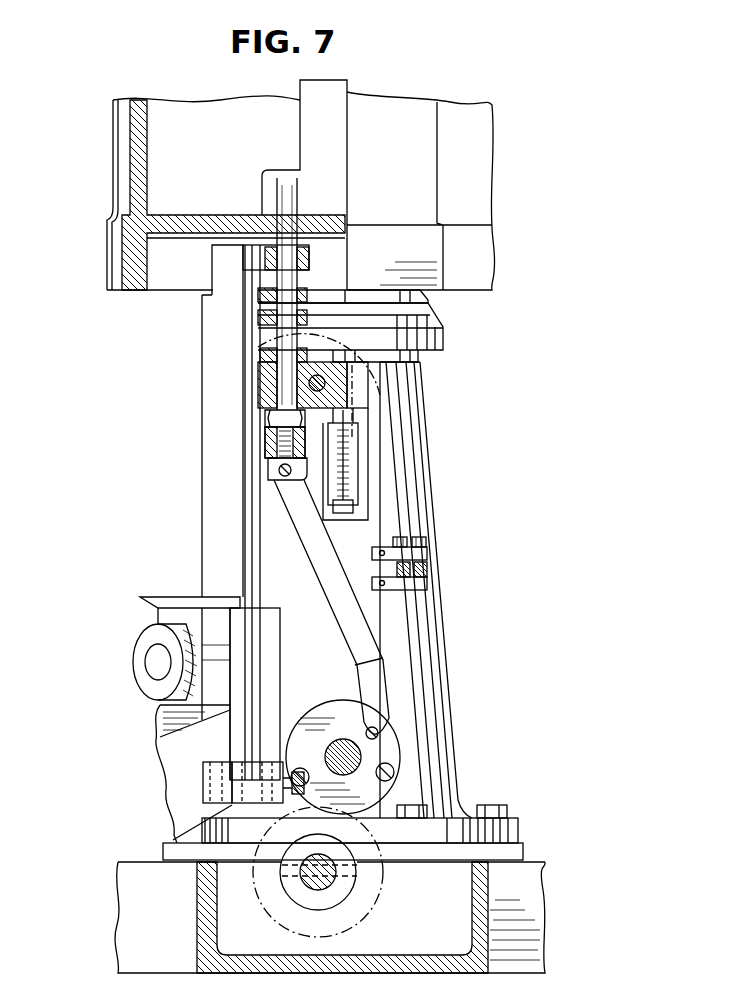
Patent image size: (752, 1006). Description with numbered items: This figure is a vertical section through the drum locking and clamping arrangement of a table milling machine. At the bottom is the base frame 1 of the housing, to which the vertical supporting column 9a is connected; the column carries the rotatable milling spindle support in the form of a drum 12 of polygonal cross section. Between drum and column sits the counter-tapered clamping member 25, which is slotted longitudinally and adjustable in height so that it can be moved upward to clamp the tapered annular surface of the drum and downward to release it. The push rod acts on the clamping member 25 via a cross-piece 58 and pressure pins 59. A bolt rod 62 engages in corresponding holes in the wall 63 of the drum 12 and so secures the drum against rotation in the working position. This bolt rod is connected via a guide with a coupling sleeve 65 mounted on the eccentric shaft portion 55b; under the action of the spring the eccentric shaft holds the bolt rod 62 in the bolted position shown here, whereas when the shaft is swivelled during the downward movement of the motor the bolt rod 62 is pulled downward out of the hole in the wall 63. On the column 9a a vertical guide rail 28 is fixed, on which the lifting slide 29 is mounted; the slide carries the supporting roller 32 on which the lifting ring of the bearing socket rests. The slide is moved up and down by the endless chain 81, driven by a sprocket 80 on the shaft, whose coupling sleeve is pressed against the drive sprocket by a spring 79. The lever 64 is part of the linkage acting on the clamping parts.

The drum 12 is at (140, 157).
The bolt rod 62 is at (285, 196).
The wall of the drum 63 is at (338, 220).
The clamping member 25 is at (437, 340).
The vertical guide rail 28 is at (218, 440).
The pressure pins 59 is at (345, 417).
The cross-piece 58 is at (355, 472).
The supporting column 9a is at (420, 510).
The lever 64 is at (322, 563).
The endless chain 81 is at (380, 640).
The supporting roller 32 is at (145, 682).
The eccentric shaft portion 55b is at (390, 737).
The lifting slide 29 is at (177, 788).
The coupling sleeve 65 is at (372, 815).
The spring 79 is at (342, 888).
The sprocket 80 is at (300, 934).
The base frame 1 is at (133, 908).